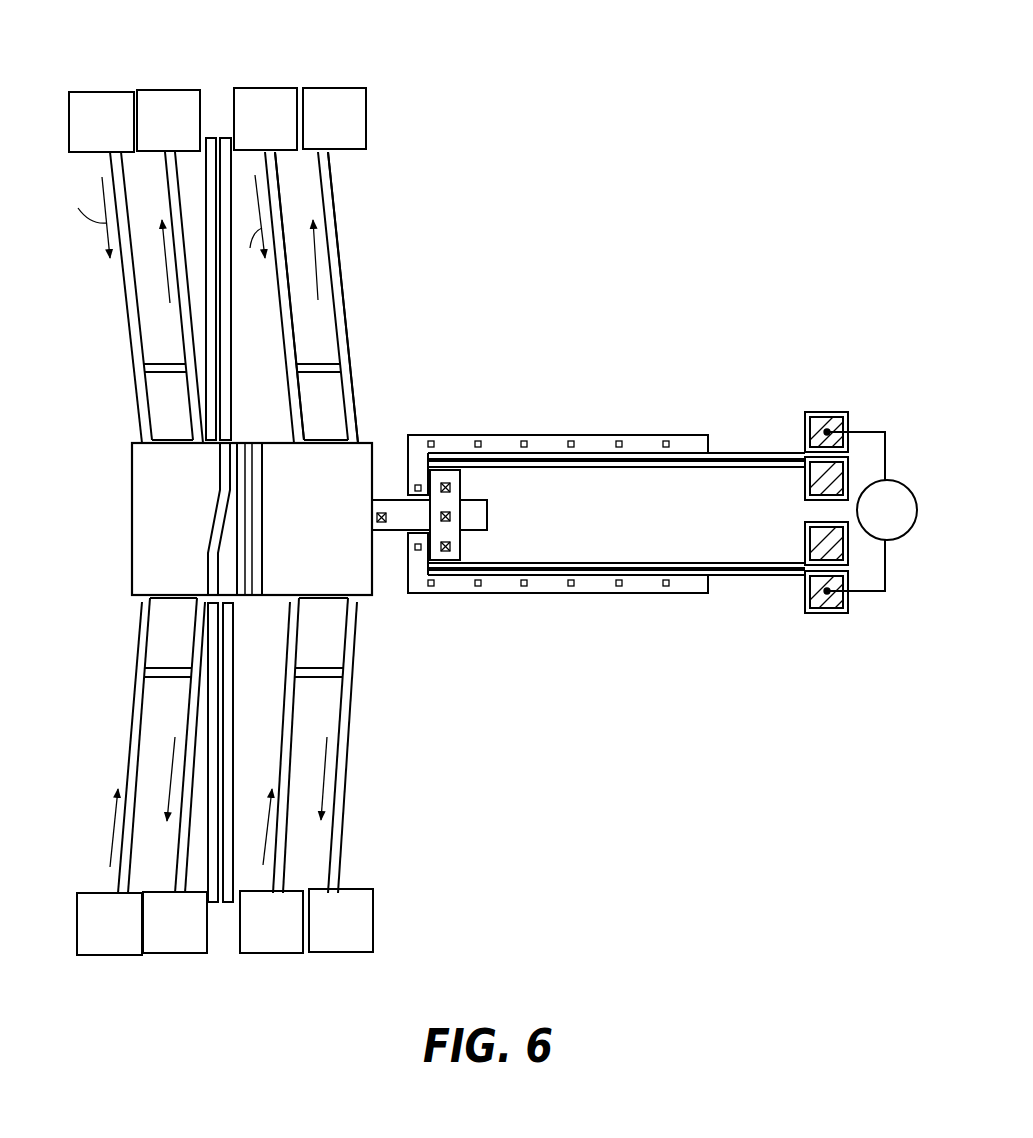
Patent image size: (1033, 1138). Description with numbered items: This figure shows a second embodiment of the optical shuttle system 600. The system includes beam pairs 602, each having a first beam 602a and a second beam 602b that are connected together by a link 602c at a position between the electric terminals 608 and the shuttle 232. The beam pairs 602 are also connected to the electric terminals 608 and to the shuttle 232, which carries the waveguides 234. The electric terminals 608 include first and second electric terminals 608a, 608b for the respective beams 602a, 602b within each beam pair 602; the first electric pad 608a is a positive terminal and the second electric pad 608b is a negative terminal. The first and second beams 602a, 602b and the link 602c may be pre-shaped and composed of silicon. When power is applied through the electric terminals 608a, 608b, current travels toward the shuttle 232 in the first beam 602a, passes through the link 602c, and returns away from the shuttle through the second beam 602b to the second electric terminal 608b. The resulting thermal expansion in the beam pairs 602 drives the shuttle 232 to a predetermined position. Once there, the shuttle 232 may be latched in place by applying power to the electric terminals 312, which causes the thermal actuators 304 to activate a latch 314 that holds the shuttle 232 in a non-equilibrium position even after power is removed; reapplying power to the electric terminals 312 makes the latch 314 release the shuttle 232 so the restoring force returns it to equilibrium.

The optical shuttle system 600 is at (606, 224).
The beam pair 602 is at (367, 237).
The first beam 602a is at (293, 387).
The second beam 602b is at (350, 387).
The link 602c is at (325, 367).
The electric terminals 608 is at (360, 47).
The first electric terminal 608a is at (265, 95).
The second electric terminal 608b is at (360, 108).
The shuttle 232 is at (368, 467).
The waveguides 234 is at (217, 527).
The thermal actuators 304 is at (548, 436).
The electric terminals 312 is at (823, 418).
The latch 314 is at (487, 517).